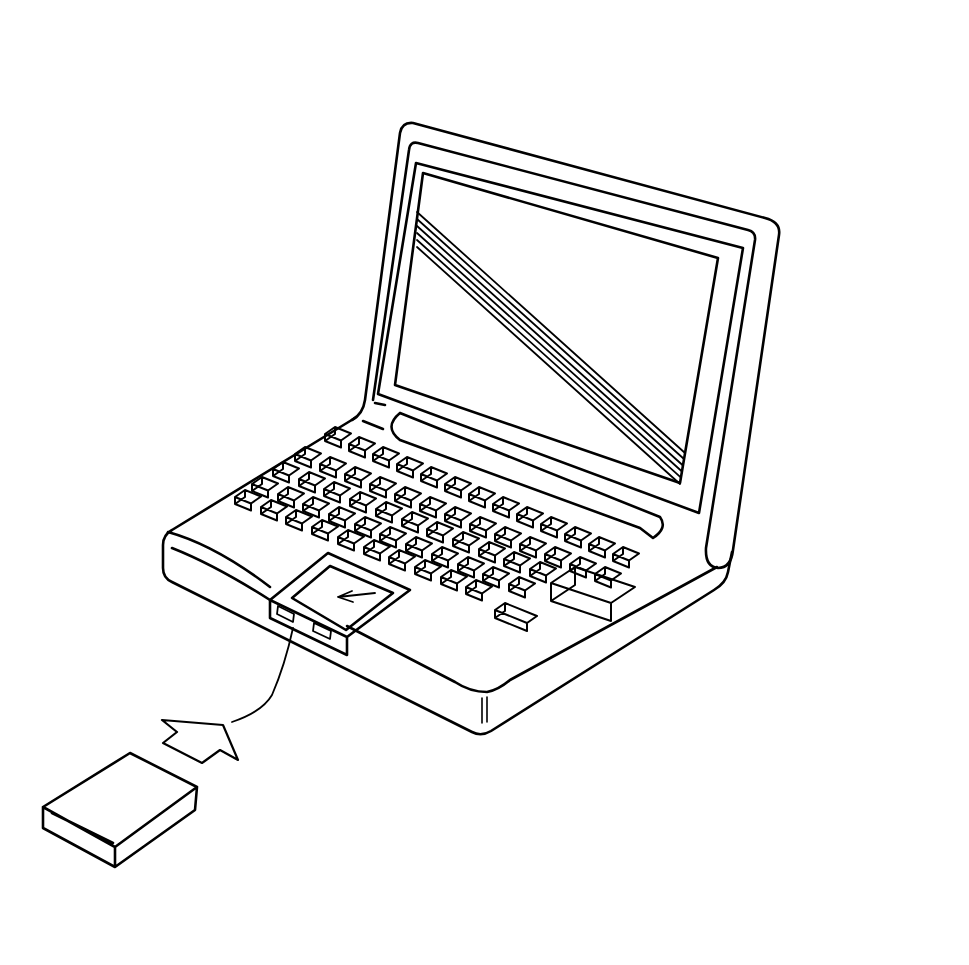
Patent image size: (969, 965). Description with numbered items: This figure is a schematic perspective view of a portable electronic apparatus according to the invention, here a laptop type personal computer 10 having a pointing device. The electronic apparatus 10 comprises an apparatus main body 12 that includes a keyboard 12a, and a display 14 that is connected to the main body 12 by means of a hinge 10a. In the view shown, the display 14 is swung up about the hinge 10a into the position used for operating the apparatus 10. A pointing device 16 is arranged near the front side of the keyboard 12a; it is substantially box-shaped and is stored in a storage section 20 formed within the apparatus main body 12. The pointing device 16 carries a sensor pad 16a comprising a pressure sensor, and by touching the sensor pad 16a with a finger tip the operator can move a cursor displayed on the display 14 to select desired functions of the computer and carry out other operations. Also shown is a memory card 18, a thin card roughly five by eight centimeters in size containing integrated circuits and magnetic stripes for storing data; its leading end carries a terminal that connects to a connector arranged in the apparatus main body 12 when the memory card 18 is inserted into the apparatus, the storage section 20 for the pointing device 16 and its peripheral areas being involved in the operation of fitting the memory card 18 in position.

The laptop type personal computer 10 is at (476, 496).
The hinge 10a is at (632, 513).
The apparatus main body 12 is at (593, 655).
The keyboard 12a is at (303, 447).
The display 14 is at (467, 230).
The pointing device 16 is at (390, 598).
The sensor pad 16a is at (335, 578).
The memory card 18 is at (177, 827).
The storage section 20 is at (343, 643).